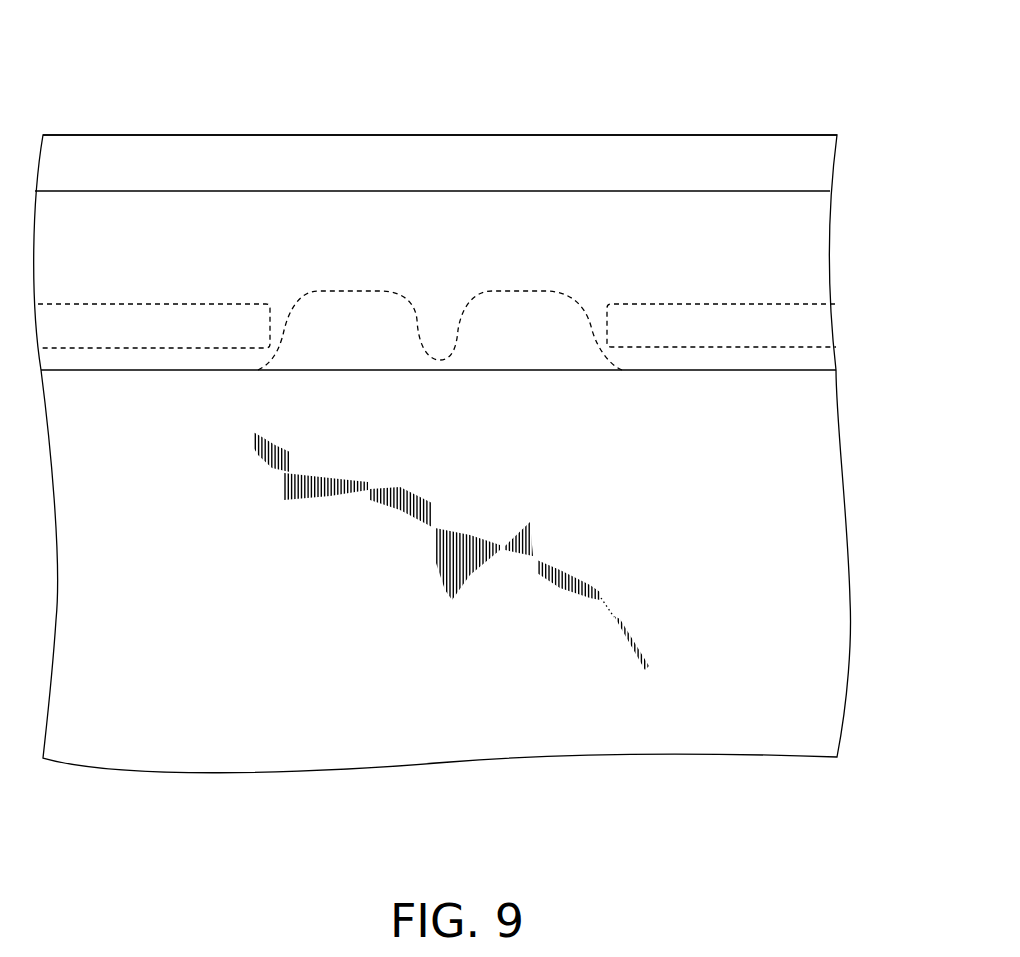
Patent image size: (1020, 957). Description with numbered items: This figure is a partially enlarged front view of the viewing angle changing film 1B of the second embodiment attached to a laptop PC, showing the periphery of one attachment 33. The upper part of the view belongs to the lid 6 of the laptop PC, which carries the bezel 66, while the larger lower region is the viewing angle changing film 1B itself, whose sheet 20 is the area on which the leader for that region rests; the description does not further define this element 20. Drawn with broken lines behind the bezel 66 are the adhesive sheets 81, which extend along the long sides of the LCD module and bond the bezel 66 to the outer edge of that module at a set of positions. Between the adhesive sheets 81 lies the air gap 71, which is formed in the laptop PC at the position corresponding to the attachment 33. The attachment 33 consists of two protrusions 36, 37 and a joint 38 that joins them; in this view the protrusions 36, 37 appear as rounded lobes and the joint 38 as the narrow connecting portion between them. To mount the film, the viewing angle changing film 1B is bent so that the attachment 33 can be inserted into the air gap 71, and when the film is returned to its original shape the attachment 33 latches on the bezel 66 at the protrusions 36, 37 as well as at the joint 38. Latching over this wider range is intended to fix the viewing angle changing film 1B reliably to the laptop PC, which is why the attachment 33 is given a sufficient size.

The lid 6 is at (779, 128).
The bezel 66 is at (669, 205).
The adhesive sheets 81 is at (159, 304).
The air gap 71 is at (282, 332).
The attachment 33 is at (309, 226).
The protrusion 36 is at (367, 291).
The joint 38 is at (440, 358).
The protrusion 37 is at (530, 291).
The viewing angle changing film 1B is at (786, 508).
The substrate 20 is at (785, 643).